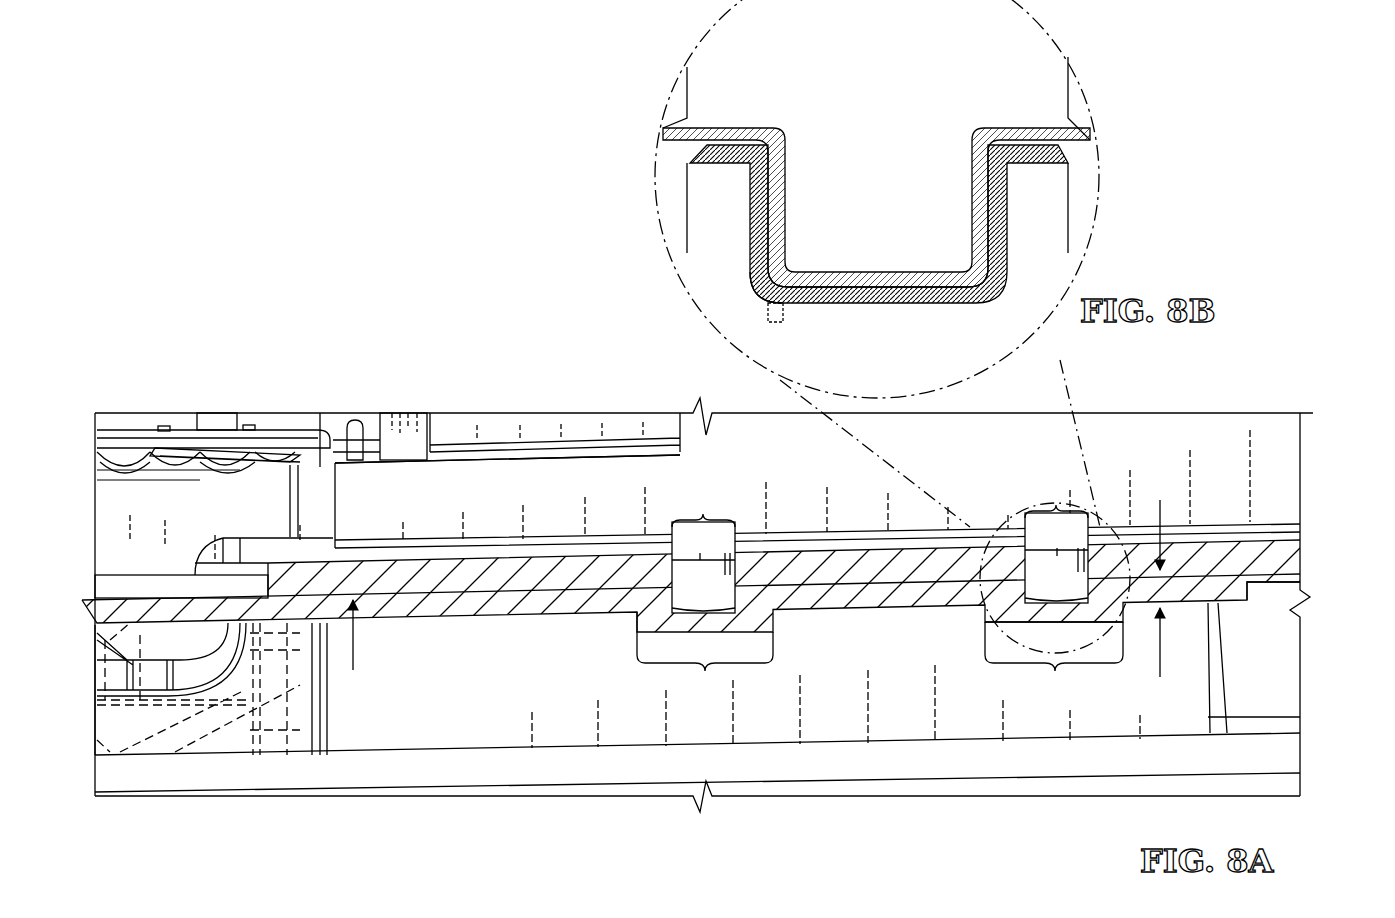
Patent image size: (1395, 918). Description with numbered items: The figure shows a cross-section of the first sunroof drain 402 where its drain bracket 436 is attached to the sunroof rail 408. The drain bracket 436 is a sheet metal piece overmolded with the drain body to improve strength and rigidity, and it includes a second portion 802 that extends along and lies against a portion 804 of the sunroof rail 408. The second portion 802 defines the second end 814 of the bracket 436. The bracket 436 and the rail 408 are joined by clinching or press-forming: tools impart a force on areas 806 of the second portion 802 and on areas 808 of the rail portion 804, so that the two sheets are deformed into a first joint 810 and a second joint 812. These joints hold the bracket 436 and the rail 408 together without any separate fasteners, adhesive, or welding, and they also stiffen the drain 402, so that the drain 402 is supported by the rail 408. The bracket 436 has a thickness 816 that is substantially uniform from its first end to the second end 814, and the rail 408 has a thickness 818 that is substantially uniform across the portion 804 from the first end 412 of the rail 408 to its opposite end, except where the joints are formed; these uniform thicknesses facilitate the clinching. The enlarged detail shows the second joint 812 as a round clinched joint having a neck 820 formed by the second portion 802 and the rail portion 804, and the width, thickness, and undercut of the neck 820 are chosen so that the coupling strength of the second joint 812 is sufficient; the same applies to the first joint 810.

In FIG. 8A, the first sunroof drain 402 is at (151, 525).
In FIG. 8A, the first end of the rail 412 is at (266, 578).
In FIG. 8A, the sunroof rail 408 is at (353, 550).
In FIG. 8A, the drain bracket 436 is at (1222, 606).
In FIG. 8A, the second portion of the bracket 802 is at (467, 622).
In FIG. 8B, the second portion of the bracket 802 is at (706, 160).
In FIG. 8A, the portion of the sunroof rail 804 is at (415, 558).
In FIG. 8B, the portion of the sunroof rail 804 is at (718, 128).
In FIG. 8A, the areas of the bracket 806 is at (705, 671).
In FIG. 8A, the areas of the rail 808 is at (703, 514).
In FIG. 8A, the first joint 810 is at (632, 640).
In FIG. 8A, the second joint 812 is at (980, 630).
In FIG. 8B, the second joint 812 is at (746, 294).
In FIG. 8A, the second end of the bracket 814 is at (1260, 590).
In FIG. 8A, the thickness of the bracket 816 is at (1163, 590).
In FIG. 8A, the thickness of the rail 818 is at (353, 578).
In FIG. 8B, the neck 820 is at (783, 322).